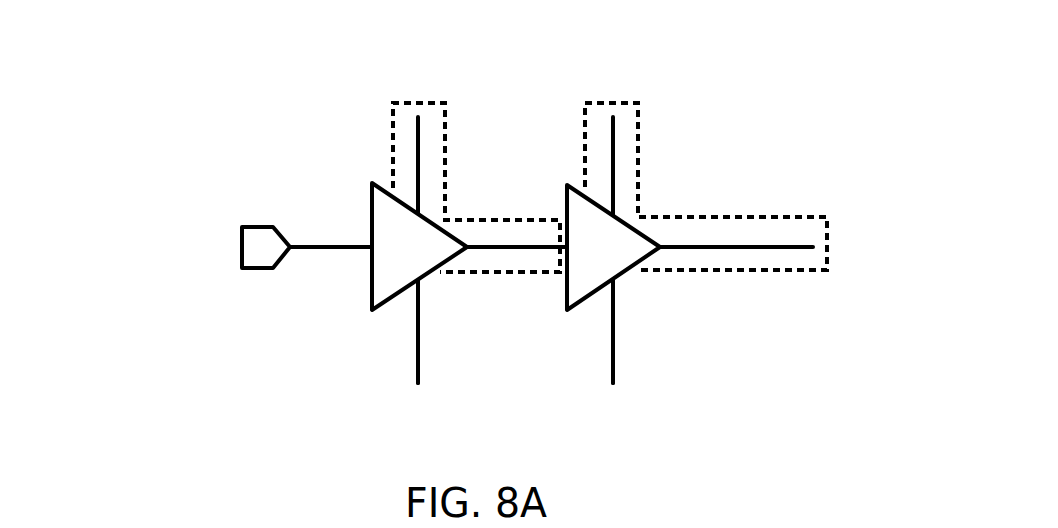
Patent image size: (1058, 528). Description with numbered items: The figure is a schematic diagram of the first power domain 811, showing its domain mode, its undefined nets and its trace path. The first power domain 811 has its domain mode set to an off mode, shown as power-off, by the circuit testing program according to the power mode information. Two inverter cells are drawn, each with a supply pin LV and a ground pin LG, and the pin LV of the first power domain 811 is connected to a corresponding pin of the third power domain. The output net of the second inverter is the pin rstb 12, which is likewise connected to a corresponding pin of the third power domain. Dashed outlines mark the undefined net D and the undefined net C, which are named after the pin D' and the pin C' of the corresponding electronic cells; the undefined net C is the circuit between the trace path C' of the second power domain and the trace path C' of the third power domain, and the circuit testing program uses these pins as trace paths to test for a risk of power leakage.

The first power domain 811 is at (473, 235).
The rstb12 net 12 is at (789, 237).
The undefined net D is at (507, 220).
The undefined net C is at (770, 215).
The pin LV is at (522, 223).
The LG ground pin LG is at (517, 359).